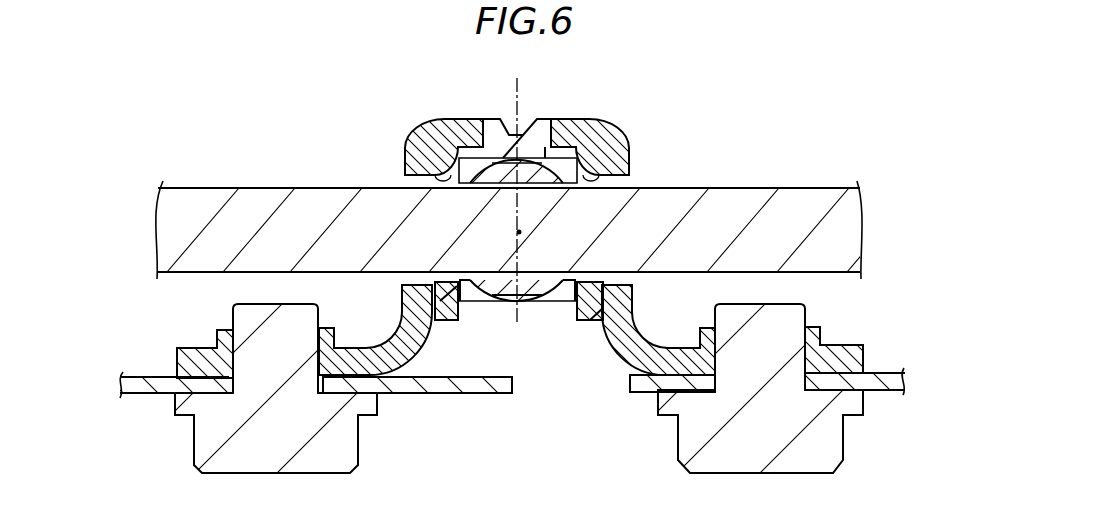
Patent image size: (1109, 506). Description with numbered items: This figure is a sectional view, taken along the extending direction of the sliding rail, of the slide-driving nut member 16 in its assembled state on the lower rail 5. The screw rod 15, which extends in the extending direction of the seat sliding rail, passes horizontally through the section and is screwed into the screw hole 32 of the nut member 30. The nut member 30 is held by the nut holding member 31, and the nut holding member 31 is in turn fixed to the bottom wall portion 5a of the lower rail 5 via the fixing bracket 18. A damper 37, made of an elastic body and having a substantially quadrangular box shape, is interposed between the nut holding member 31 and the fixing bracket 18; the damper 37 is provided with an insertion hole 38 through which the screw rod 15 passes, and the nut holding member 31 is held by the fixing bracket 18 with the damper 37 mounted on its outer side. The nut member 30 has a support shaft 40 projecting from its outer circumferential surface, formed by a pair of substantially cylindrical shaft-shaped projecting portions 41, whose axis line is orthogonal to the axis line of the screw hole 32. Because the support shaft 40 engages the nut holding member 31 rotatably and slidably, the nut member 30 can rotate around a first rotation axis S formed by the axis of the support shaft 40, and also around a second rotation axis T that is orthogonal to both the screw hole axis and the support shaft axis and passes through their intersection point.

The lower rail 5 is at (517, 388).
The bottom wall portion 5a is at (153, 394).
The screw rod 15 is at (343, 276).
The slide-driving nut member 16 is at (519, 241).
The fixing bracket 18 is at (612, 342).
The nut member 30 is at (492, 284).
The nut holding member 31 is at (561, 302).
The screw hole 32 is at (494, 188).
The damper 37 is at (586, 322).
The insertion hole 38 is at (424, 141).
The support shaft 40 is at (531, 241).
The shaft-shaped projecting portions 41 is at (533, 169).
The first rotation axis S is at (517, 87).
The second rotation axis T is at (522, 231).